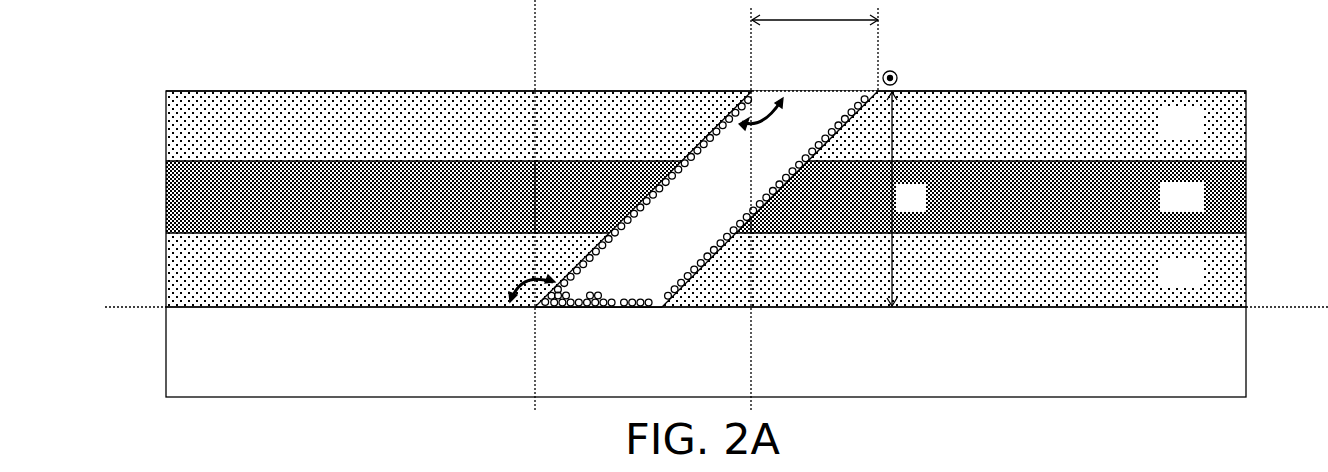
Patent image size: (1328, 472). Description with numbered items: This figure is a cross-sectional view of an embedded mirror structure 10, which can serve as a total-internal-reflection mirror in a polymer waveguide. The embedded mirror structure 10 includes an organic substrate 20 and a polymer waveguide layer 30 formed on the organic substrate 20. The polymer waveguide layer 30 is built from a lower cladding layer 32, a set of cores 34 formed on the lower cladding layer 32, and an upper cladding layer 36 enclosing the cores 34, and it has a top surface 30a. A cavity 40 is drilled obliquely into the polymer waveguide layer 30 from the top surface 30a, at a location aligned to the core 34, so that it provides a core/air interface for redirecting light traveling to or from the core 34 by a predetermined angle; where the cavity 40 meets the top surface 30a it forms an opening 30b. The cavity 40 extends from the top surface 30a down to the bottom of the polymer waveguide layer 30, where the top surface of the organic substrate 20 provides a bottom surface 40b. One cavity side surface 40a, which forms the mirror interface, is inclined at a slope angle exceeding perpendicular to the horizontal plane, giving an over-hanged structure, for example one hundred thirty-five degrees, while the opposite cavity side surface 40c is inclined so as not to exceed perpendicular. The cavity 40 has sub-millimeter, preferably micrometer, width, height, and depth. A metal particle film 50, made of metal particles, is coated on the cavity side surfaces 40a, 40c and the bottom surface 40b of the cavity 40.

The embedded mirror structure 10 is at (90, 82).
The organic substrate 20 is at (720, 381).
The polymer waveguide layer 30 is at (1252, 93).
The top surface 30a is at (1186, 88).
The opening 30b is at (825, 60).
The lower cladding layer 32 is at (1193, 286).
The core 34 is at (1193, 210).
The upper cladding layer 36 is at (1194, 135).
The cavity 40 is at (735, 197).
The cavity side surface 40a is at (690, 147).
The bottom surface 40b is at (618, 310).
The cavity side surface 40c is at (727, 246).
The metal particle film 50 is at (673, 196).